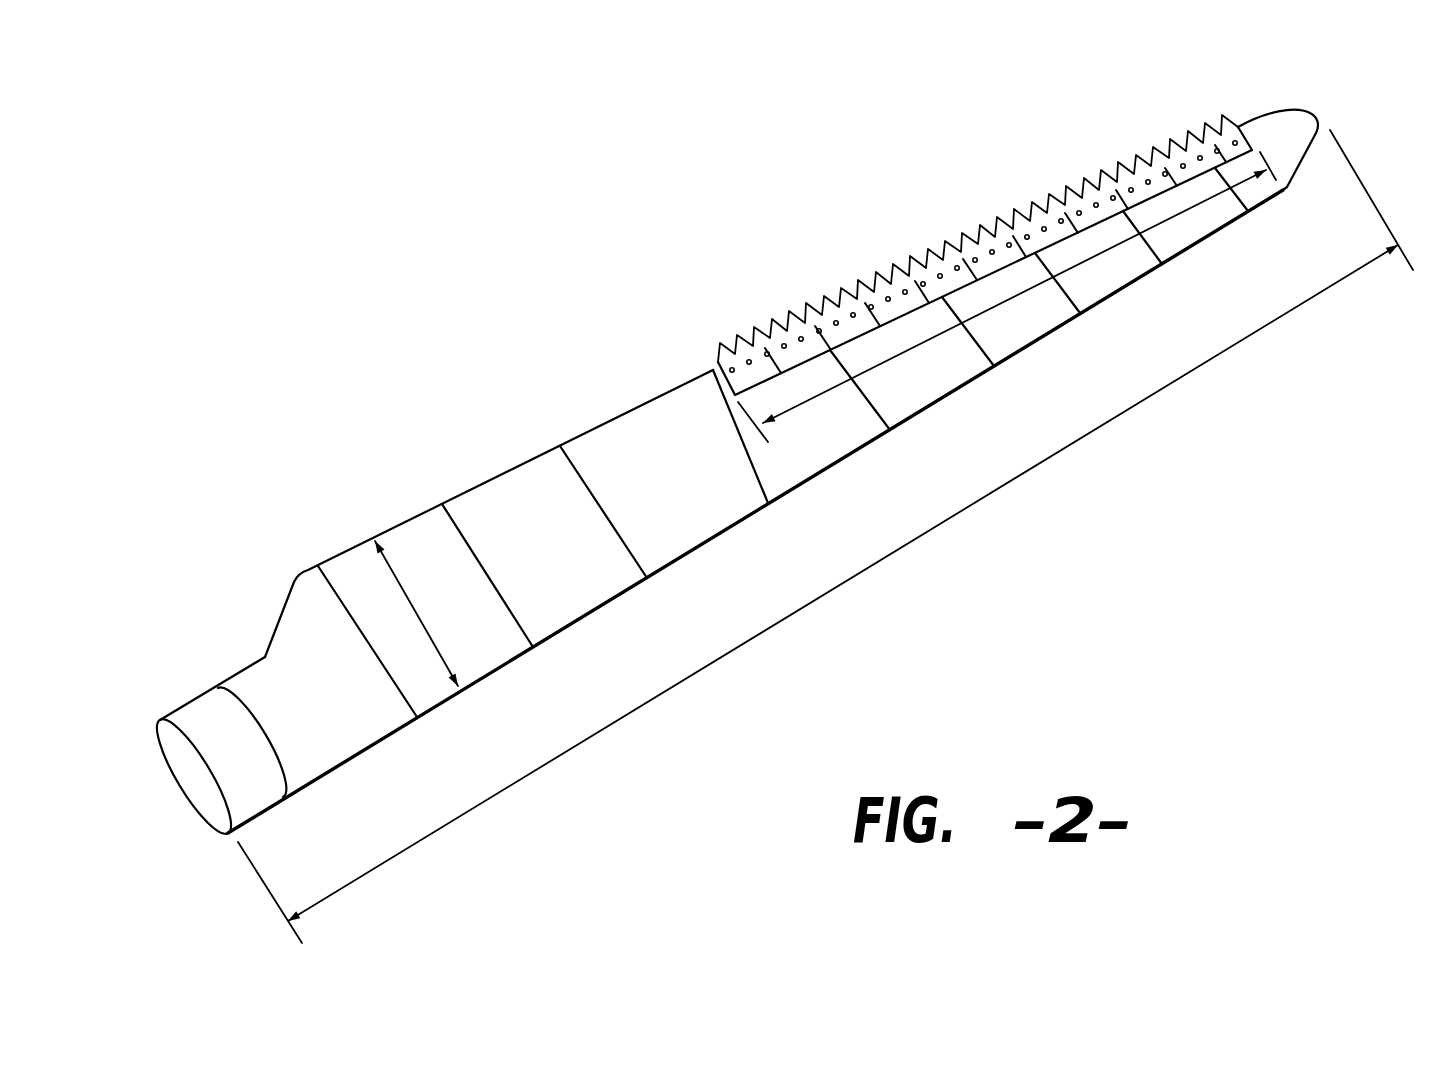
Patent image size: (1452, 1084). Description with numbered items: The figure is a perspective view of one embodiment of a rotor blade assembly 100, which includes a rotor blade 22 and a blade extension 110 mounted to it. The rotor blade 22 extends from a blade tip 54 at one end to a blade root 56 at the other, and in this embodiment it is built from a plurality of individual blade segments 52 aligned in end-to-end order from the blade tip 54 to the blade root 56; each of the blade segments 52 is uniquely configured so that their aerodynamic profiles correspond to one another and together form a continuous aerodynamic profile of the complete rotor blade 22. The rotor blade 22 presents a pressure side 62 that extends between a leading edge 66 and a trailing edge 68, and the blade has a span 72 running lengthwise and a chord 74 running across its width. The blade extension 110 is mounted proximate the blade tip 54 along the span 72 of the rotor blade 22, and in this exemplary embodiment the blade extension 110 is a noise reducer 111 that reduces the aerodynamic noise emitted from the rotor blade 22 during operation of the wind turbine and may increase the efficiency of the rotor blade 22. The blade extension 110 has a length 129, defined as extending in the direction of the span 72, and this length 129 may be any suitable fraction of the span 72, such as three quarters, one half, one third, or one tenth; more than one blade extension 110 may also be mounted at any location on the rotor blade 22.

The rotor blade assembly 100 is at (781, 499).
The rotor blade 22 is at (781, 518).
The blade segments 52 is at (332, 733).
The blade tip 54 is at (1310, 113).
The blade root 56 is at (193, 803).
The pressure side 62 is at (623, 440).
The leading edge 66 is at (820, 468).
The trailing edge 68 is at (662, 395).
The span 72 is at (848, 580).
The chord 74 is at (407, 595).
The blade extension 110 is at (997, 248).
The noise reducer 111 is at (1236, 125).
The length 129 is at (1008, 303).